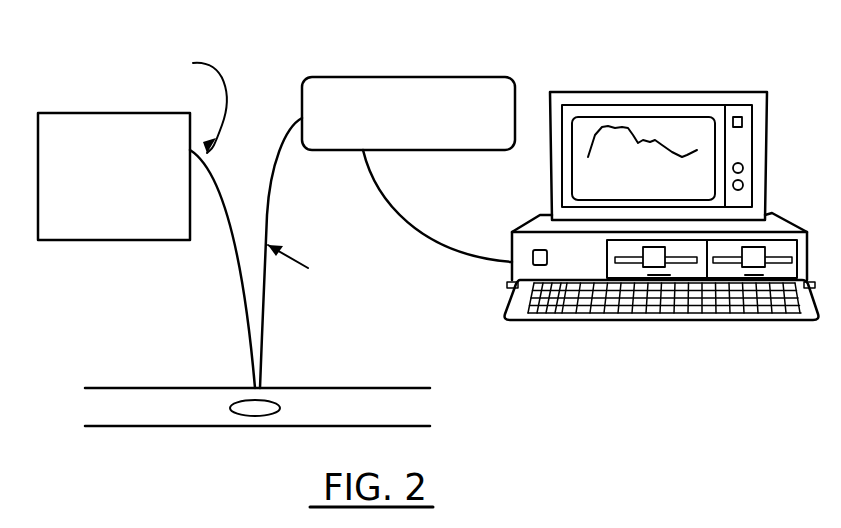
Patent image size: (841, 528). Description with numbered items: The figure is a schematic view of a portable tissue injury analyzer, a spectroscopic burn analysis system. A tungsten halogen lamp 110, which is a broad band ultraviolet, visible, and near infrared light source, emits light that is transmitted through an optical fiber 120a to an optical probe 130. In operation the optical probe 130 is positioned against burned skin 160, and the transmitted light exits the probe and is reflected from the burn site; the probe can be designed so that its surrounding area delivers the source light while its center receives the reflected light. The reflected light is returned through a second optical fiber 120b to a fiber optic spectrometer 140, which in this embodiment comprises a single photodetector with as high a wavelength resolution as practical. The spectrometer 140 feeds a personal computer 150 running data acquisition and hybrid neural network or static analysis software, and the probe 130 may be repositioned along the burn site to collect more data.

The tungsten halogen lamp 110 is at (135, 203).
The optical fiber 120a is at (243, 290).
The optical fiber 120b is at (262, 327).
The optical probe 130 is at (253, 383).
The fiber optic spectrometer 140 is at (432, 137).
The personal computer 150 is at (745, 92).
The burned skin 160 is at (248, 416).